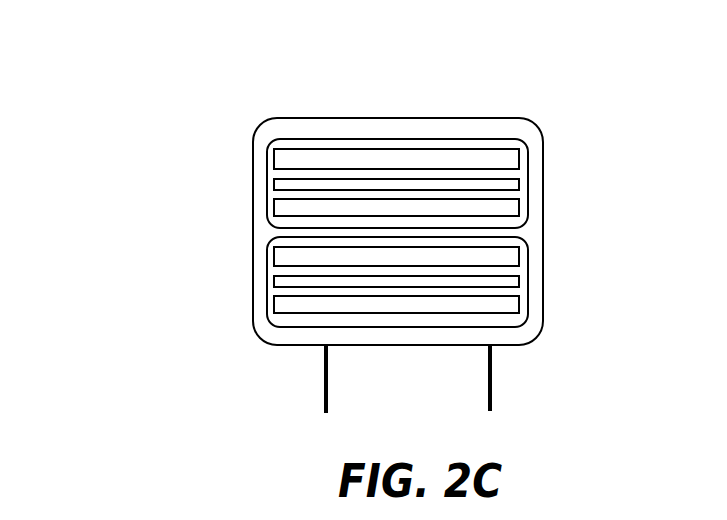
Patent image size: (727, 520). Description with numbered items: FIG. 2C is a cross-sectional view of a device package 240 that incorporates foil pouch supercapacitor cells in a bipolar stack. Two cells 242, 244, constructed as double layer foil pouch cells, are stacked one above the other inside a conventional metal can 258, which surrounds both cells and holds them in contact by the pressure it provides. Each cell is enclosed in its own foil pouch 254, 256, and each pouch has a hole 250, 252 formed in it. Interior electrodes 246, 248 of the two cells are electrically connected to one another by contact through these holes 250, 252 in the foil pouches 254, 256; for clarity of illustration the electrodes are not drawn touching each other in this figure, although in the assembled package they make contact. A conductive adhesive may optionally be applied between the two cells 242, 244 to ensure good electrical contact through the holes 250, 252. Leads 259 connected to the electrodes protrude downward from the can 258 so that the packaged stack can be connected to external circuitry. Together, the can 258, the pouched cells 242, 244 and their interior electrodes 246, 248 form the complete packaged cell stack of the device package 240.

The device package 240 is at (186, 119).
The cell 242 is at (527, 172).
The cell 244 is at (528, 278).
The interior electrode 246 is at (507, 202).
The interior electrode 248 is at (507, 255).
The hole 250 is at (392, 223).
The hole 252 is at (387, 240).
The foil pouch 254 is at (330, 139).
The foil pouch 256 is at (305, 345).
The metal can 258 is at (543, 310).
The leads 259 is at (328, 388).